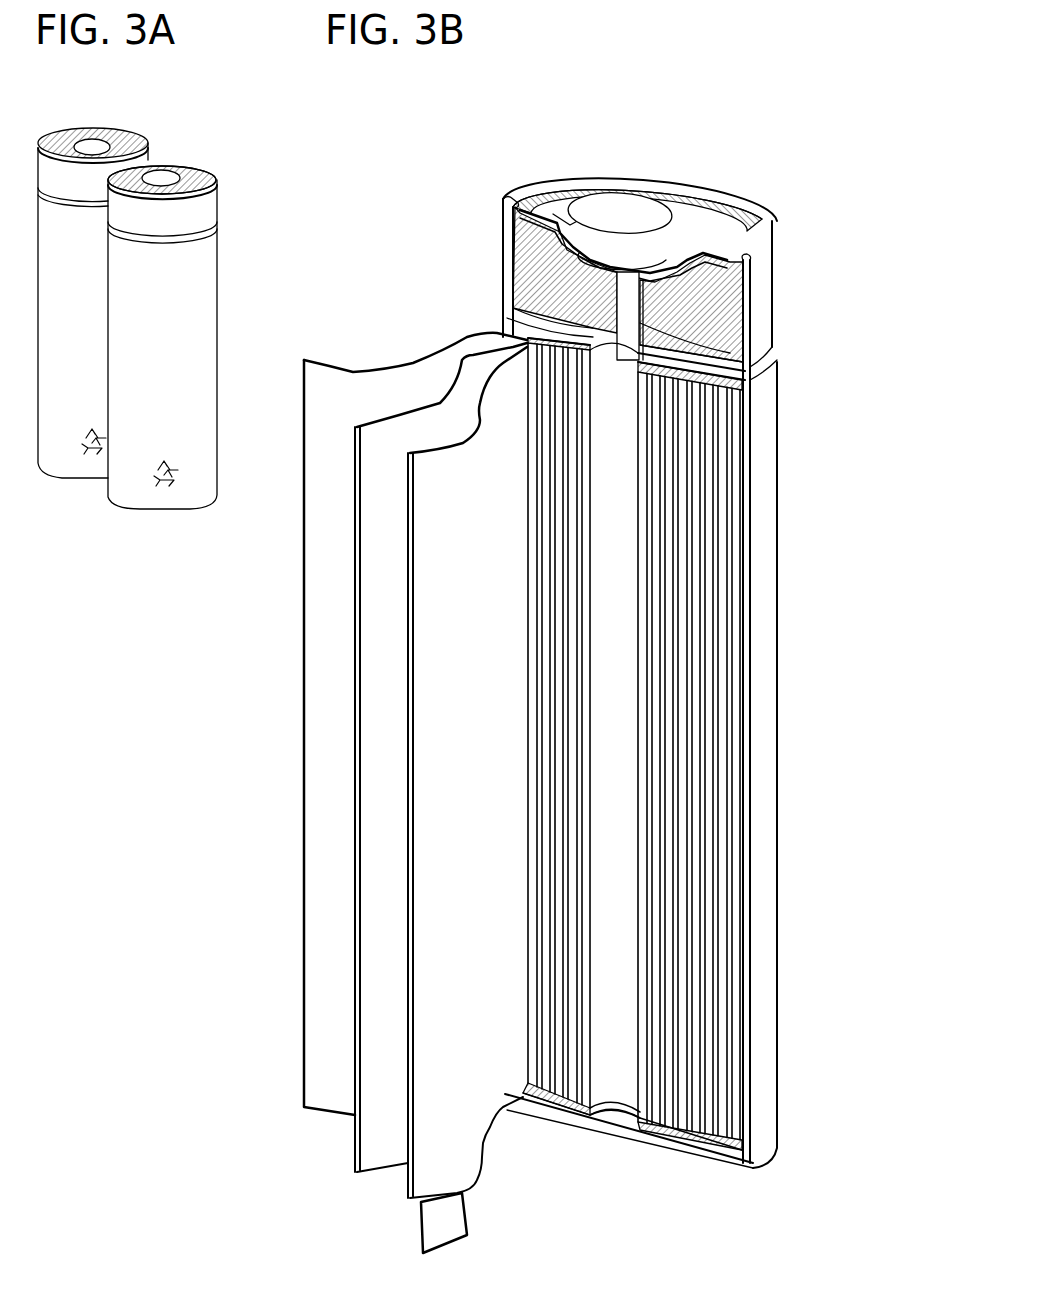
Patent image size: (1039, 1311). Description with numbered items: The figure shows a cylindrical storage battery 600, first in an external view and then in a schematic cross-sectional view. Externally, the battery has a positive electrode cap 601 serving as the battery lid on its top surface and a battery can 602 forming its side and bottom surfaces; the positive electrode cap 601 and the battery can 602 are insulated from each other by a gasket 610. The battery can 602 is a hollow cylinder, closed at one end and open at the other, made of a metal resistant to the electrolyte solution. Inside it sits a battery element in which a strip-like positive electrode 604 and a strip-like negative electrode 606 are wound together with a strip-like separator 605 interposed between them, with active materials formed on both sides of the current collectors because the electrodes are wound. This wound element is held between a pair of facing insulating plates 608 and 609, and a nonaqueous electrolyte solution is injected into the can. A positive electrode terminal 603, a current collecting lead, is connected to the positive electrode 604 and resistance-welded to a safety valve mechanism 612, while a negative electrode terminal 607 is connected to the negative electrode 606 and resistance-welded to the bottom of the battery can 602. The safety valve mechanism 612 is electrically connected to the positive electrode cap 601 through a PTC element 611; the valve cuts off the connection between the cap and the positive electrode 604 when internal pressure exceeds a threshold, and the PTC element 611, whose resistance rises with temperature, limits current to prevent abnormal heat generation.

In FIG. 3A, the cylindrical storage battery 600 is at (132, 88).
In FIG. 3A, the positive electrode cap 601 is at (164, 176).
In FIG. 3B, the positive electrode cap 601 is at (617, 207).
In FIG. 3A, the battery can 602 is at (127, 490).
In FIG. 3B, the battery can 602 is at (645, 1138).
In FIG. 3B, the positive electrode terminal 603 is at (630, 320).
In FIG. 3B, the positive electrode 604 is at (357, 400).
In FIG. 3B, the separator 605 is at (407, 443).
In FIG. 3B, the negative electrode 606 is at (472, 470).
In FIG. 3B, the negative electrode terminal 607 is at (440, 1225).
In FIG. 3B, the insulating plate 608 is at (510, 323).
In FIG. 3B, the insulating plate 609 is at (557, 1110).
In FIG. 3A, the gasket 610 is at (200, 165).
In FIG. 3B, the gasket 610 is at (497, 223).
In FIG. 3B, the PTC element 611 is at (747, 200).
In FIG. 3B, the safety valve mechanism 612 is at (607, 253).